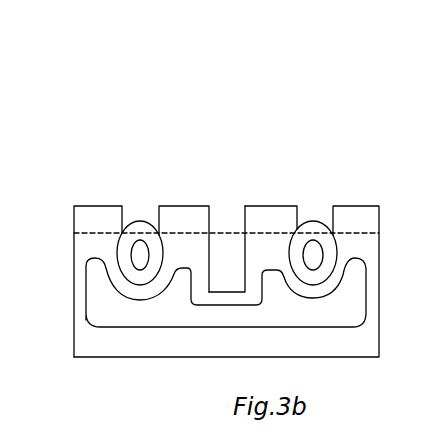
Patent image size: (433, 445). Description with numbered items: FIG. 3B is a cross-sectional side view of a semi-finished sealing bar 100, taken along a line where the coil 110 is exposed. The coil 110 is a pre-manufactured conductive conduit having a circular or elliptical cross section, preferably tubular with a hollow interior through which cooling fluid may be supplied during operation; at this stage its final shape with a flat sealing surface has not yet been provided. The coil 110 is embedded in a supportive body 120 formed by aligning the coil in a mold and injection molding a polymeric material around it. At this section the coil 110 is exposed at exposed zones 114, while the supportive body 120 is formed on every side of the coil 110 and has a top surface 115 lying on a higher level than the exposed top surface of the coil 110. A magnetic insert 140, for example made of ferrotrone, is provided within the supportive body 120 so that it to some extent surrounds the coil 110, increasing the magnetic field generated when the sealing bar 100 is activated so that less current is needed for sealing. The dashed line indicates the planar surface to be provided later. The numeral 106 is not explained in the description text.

The sealing bar 100 is at (214, 227).
The central groove 106 is at (220, 252).
The coil 110 is at (313, 227).
The exposed zones 114 is at (126, 216).
The top surface 115 is at (170, 206).
The supportive body 120 is at (85, 217).
The magnetic insert 140 is at (142, 315).